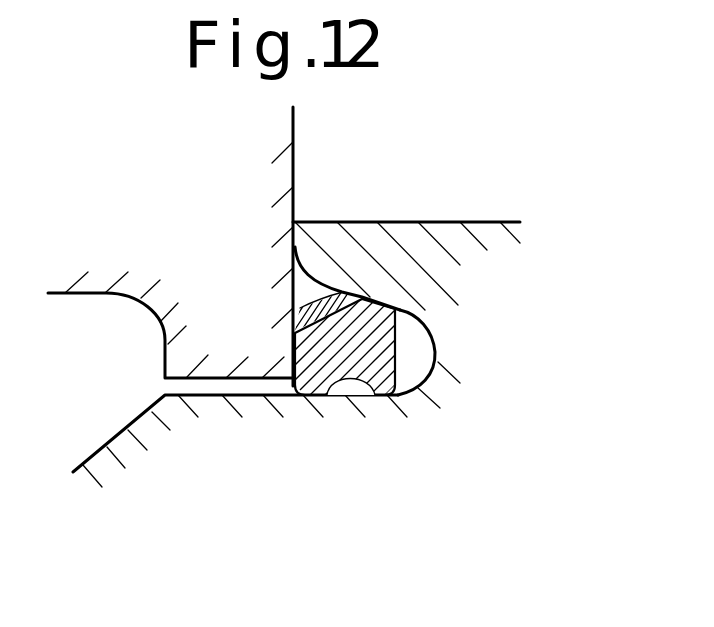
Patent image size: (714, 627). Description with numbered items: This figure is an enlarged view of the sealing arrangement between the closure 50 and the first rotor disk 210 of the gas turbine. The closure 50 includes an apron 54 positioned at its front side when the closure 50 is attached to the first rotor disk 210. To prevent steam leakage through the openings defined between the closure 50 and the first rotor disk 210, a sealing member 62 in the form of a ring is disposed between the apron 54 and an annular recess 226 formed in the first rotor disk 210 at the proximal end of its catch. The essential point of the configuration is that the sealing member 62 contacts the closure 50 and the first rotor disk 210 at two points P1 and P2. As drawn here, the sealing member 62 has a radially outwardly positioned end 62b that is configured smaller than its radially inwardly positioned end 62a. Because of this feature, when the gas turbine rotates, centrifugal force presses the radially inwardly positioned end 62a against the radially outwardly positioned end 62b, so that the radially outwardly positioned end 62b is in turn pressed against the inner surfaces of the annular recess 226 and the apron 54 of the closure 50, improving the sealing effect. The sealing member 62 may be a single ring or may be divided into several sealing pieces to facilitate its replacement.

The closure 50 is at (217, 253).
The apron 54 is at (200, 320).
The first rotor disk 210 is at (201, 491).
The annular recess 226 is at (413, 330).
The sealing member 62 is at (306, 430).
The radially inwardly positioned end 62a is at (372, 364).
The radially outwardly positioned end 62b is at (348, 294).
The contact point P1 is at (295, 337).
The contact point P2 is at (342, 292).